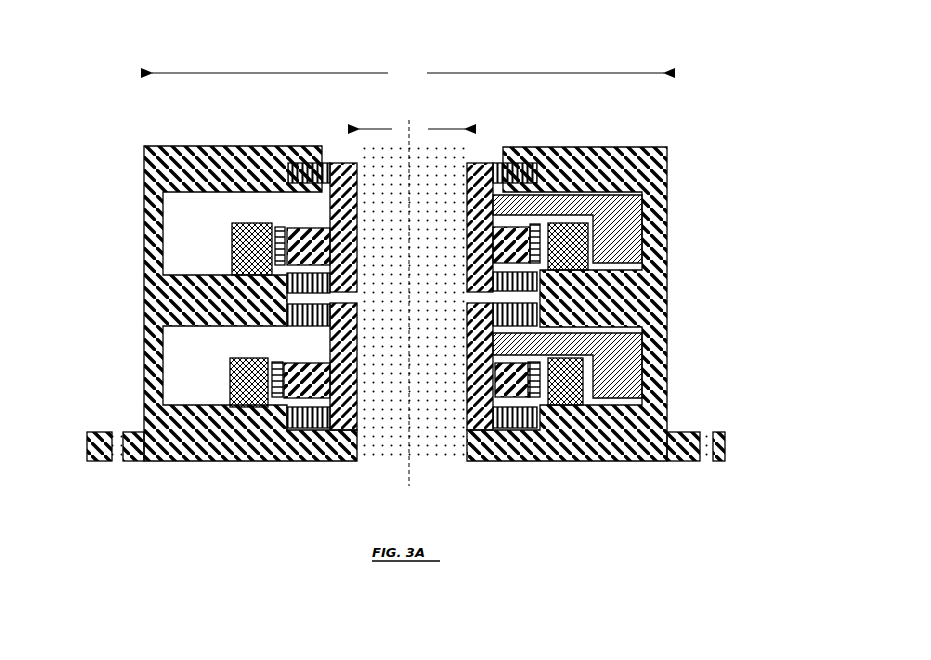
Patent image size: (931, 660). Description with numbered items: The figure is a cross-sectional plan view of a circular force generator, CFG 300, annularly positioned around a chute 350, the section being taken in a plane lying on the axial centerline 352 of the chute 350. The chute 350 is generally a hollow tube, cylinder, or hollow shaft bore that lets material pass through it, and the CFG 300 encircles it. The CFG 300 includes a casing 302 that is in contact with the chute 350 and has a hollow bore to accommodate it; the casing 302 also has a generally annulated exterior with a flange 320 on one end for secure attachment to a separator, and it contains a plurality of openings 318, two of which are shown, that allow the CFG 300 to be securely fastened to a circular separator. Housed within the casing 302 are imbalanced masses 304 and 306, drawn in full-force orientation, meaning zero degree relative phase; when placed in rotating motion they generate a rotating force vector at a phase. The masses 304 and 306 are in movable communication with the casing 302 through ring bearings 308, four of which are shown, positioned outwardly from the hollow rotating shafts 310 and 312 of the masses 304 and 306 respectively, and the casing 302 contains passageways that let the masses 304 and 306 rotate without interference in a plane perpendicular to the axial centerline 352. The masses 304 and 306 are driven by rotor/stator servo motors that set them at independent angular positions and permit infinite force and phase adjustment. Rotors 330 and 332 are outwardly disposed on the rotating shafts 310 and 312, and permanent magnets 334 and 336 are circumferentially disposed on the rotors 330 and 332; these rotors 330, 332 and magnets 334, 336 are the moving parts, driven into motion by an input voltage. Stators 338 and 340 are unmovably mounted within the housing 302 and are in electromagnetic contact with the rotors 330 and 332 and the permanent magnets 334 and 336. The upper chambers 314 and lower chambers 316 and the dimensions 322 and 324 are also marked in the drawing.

The CFG 300 is at (696, 135).
The casing 302 is at (138, 207).
The mass 304 is at (621, 240).
The mass 306 is at (622, 370).
The ring bearing 308 is at (303, 170).
The hollow rotating shaft 310 is at (340, 202).
The hollow rotating shaft 312 is at (340, 330).
The upper chamber 314 is at (180, 254).
The lower chamber 316 is at (180, 386).
The opening 318 is at (117, 450).
The flange 320 is at (128, 468).
The shaft diameter 322 is at (412, 129).
The housing width 324 is at (408, 73).
The rotor 330 is at (408, 246).
The rotor 332 is at (407, 380).
The permanent magnet 334 is at (280, 221).
The permanent magnet 336 is at (278, 400).
The stator 338 is at (410, 249).
The stator 340 is at (406, 382).
The chute 350 is at (430, 469).
The axial centerline 352 is at (402, 485).